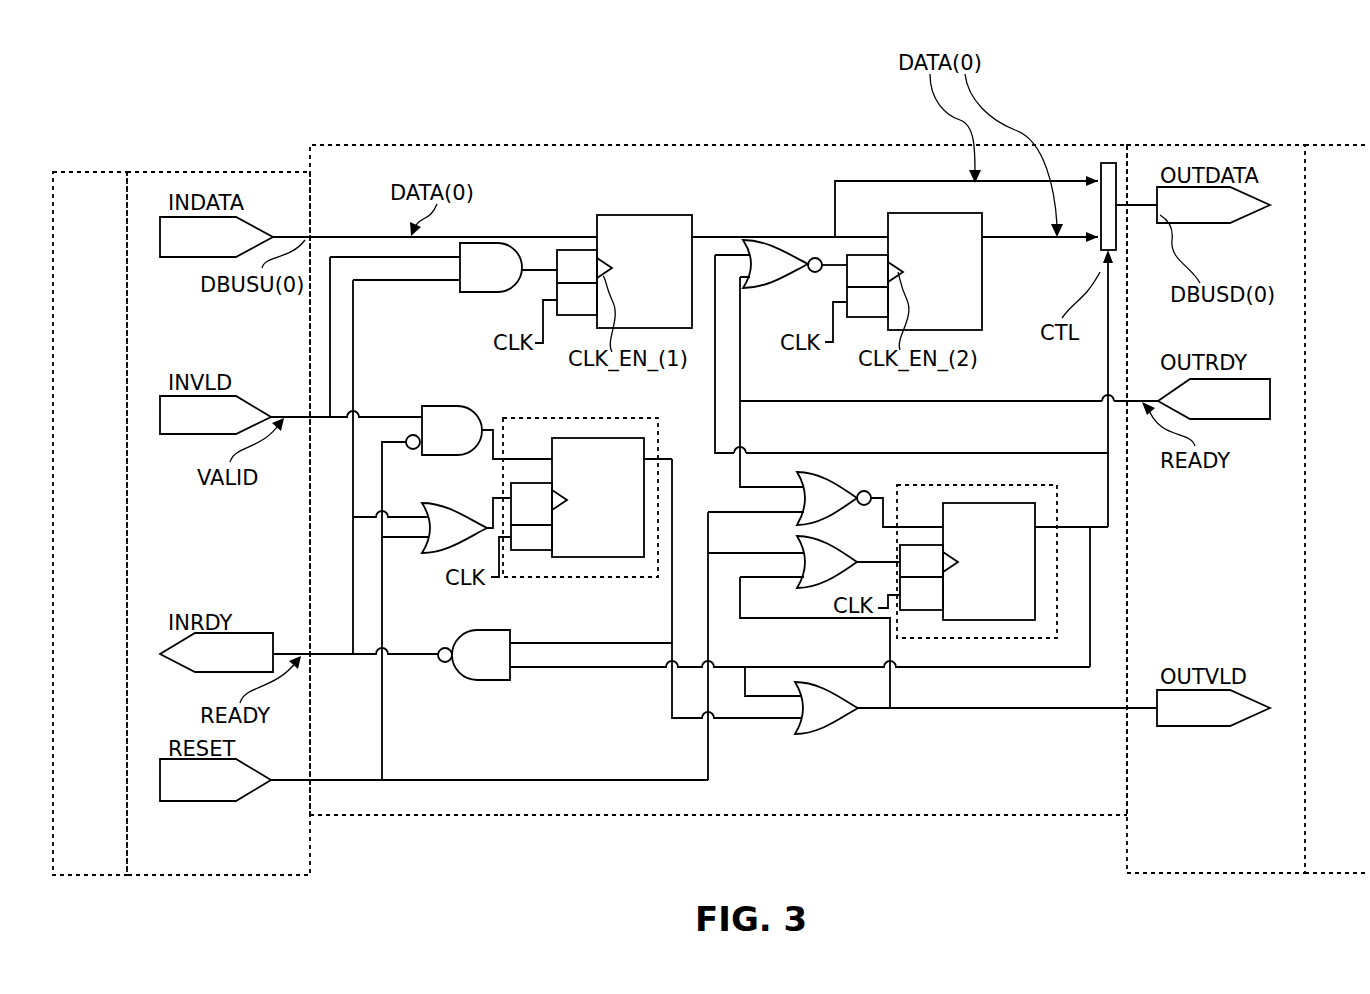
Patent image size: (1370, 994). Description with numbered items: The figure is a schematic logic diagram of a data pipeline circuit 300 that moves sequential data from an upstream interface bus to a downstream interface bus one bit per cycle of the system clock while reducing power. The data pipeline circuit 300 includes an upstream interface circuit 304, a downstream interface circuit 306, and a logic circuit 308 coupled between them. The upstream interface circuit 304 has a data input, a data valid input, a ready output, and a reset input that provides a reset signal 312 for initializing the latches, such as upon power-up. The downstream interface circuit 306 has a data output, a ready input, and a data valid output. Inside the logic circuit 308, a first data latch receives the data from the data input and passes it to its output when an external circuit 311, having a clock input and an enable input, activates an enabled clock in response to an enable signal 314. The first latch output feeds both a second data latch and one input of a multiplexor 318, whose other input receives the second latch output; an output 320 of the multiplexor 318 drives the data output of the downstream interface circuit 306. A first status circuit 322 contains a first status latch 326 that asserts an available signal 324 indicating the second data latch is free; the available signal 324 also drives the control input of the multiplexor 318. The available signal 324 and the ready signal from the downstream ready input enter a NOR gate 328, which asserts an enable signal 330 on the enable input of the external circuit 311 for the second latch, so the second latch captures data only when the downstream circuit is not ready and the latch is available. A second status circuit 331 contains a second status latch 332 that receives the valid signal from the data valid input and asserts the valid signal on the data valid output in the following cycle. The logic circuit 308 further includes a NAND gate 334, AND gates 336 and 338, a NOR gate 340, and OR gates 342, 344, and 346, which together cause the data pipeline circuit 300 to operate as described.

The data pipeline circuit 300 is at (718, 454).
The upstream interface circuit 304 is at (208, 172).
The downstream interface circuit 306 is at (1297, 143).
The logic circuit 308 is at (655, 815).
The external circuit 311 is at (568, 250).
The reset signal 312 is at (340, 783).
The enable signal 314 is at (548, 265).
The multiplexor 318 is at (1108, 163).
The output 320 is at (1131, 205).
The first status circuit 322 is at (977, 596).
The available signal 324 is at (1100, 536).
The first status latch 326 is at (1020, 628).
The NOR gate 328 is at (766, 290).
The enable signal 330 is at (830, 262).
The second status circuit 331 is at (580, 498).
The second status latch 332 is at (608, 558).
The NAND gate 334 is at (497, 680).
The AND gate 336 is at (438, 406).
The AND gate 338 is at (476, 292).
The NOR gate 340 is at (810, 474).
The OR gate 342 is at (813, 589).
The OR gate 344 is at (822, 735).
The OR gate 346 is at (437, 504).